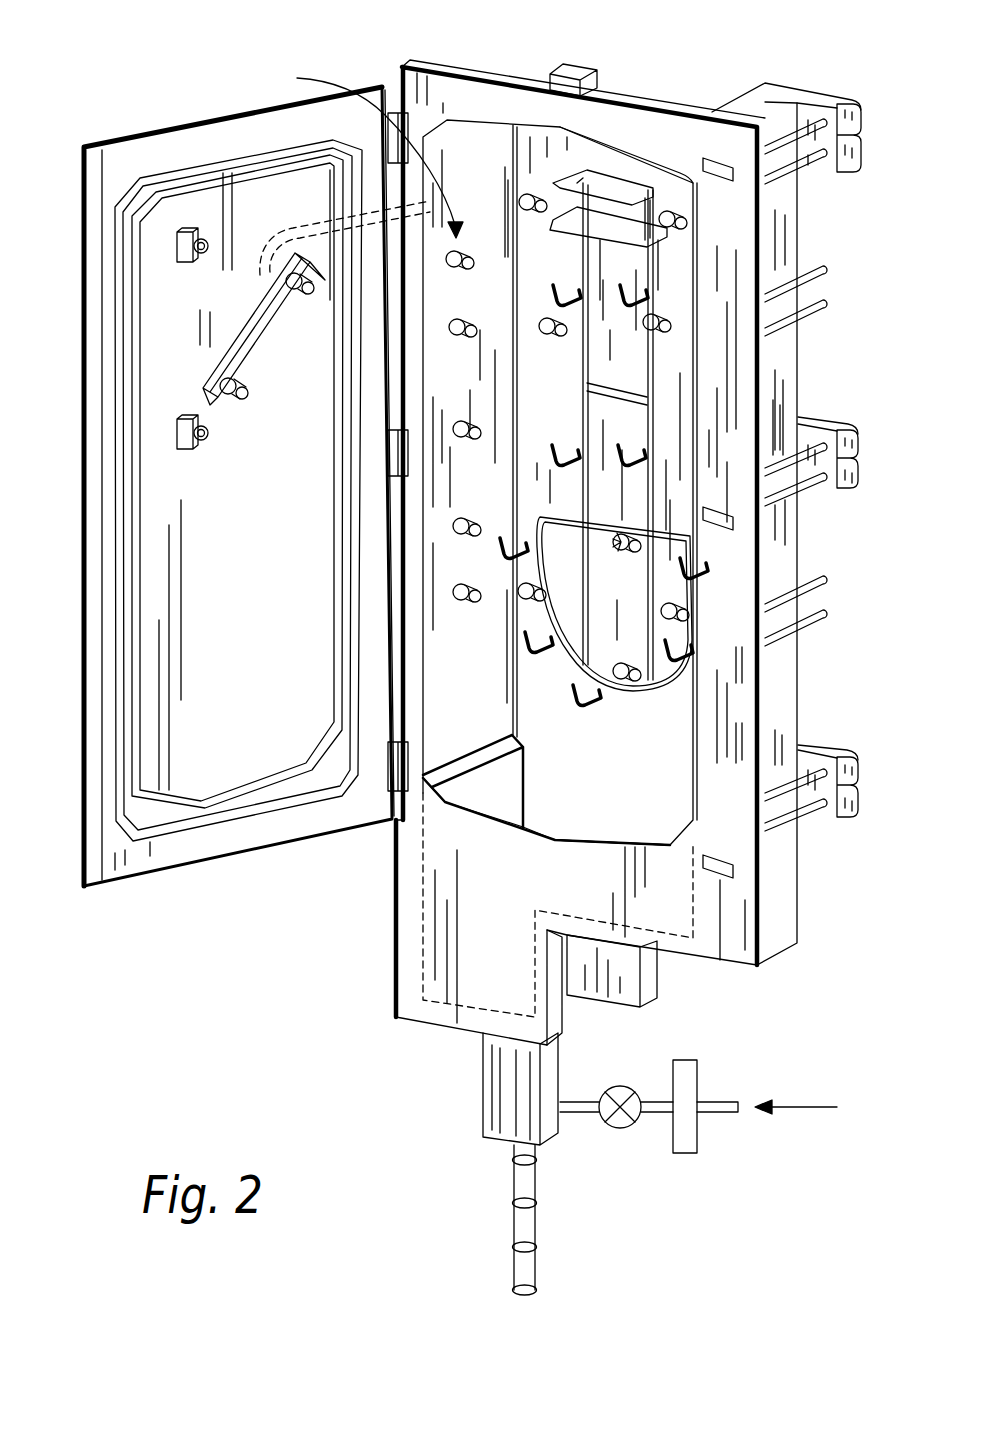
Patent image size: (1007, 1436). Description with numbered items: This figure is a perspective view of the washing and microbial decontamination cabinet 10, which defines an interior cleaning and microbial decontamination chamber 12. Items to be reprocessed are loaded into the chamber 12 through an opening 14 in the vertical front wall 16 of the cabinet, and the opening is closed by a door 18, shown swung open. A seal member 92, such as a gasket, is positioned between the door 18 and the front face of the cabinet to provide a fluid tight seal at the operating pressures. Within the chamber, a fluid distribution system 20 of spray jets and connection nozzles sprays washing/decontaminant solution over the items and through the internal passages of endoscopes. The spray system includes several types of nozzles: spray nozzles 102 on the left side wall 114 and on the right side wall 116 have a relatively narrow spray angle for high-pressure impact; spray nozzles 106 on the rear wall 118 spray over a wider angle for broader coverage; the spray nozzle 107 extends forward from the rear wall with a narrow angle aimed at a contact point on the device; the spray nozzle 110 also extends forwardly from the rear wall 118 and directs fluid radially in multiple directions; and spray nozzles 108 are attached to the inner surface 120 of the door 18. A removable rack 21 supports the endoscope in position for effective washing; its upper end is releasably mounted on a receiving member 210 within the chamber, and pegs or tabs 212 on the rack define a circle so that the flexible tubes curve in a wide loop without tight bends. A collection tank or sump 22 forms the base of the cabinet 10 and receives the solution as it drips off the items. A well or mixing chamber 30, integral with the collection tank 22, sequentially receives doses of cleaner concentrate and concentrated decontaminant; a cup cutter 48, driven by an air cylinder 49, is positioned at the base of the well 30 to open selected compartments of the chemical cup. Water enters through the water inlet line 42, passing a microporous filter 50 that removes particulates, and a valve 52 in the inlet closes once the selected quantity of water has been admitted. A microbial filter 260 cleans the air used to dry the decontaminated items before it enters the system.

The washing and microbial decontamination cabinet 10 is at (344, 62).
The cleaning and microbial decontamination chamber 12 is at (569, 552).
The opening 14 is at (662, 697).
The vertical front wall 16 is at (735, 932).
The door 18 is at (137, 847).
The fluid distribution system 20 is at (361, 169).
The rack 21 is at (570, 353).
The collection tank or sump 22 is at (513, 900).
The well or mixing chamber 30 is at (428, 960).
The water inlet line 42 is at (725, 1112).
The cup cutter 48 is at (470, 1092).
The air cylinder 49 is at (537, 1218).
The microporous filter 50 is at (697, 1080).
The valve 52 is at (612, 1130).
The seal member 92 is at (360, 688).
The spray nozzles 102 is at (463, 333).
The spray nozzles 106 is at (660, 332).
The spray nozzle 107 is at (540, 330).
The spray nozzles 108 is at (302, 290).
The spray nozzle 110 is at (618, 550).
The left side wall 114 is at (463, 183).
The right side wall 116 is at (676, 737).
The rear wall 118 is at (613, 177).
The inner surface 120 is at (178, 330).
The receiving member 210 is at (655, 245).
The pegs or tabs 212 is at (598, 700).
The microbial filter 260 is at (712, 880).